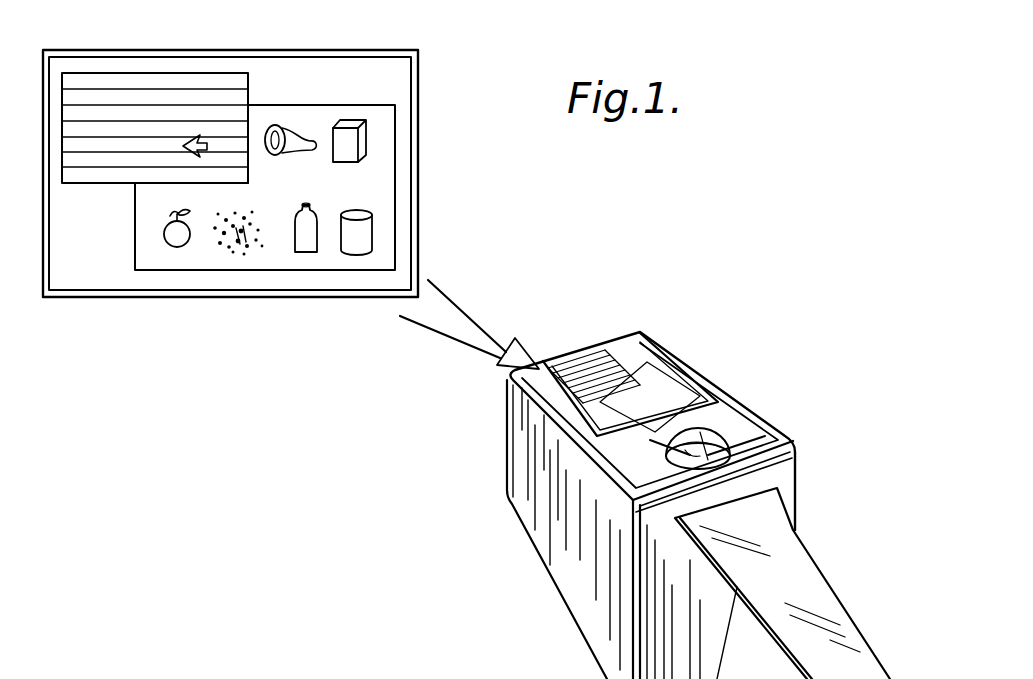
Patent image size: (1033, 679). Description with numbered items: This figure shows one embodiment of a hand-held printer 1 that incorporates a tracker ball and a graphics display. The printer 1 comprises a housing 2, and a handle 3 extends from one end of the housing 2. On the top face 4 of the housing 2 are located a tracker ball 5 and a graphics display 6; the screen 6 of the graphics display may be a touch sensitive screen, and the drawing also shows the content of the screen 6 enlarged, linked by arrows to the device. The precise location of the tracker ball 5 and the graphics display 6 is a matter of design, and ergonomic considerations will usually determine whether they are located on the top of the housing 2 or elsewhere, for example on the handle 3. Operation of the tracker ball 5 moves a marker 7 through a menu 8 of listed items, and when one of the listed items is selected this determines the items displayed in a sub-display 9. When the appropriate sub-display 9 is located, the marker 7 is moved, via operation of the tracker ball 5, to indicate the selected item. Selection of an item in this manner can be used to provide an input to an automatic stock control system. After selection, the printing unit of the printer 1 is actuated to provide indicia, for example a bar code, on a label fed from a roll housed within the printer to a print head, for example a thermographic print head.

The hand-held printer 1 is at (567, 518).
The housing 2 is at (508, 420).
The handle 3 is at (801, 594).
The top face 4 is at (760, 438).
The tracker ball 5 is at (698, 440).
The graphics display 6 is at (433, 111).
The marker 7 is at (204, 141).
The menu 8 is at (110, 63).
The sub-display 9 is at (322, 105).